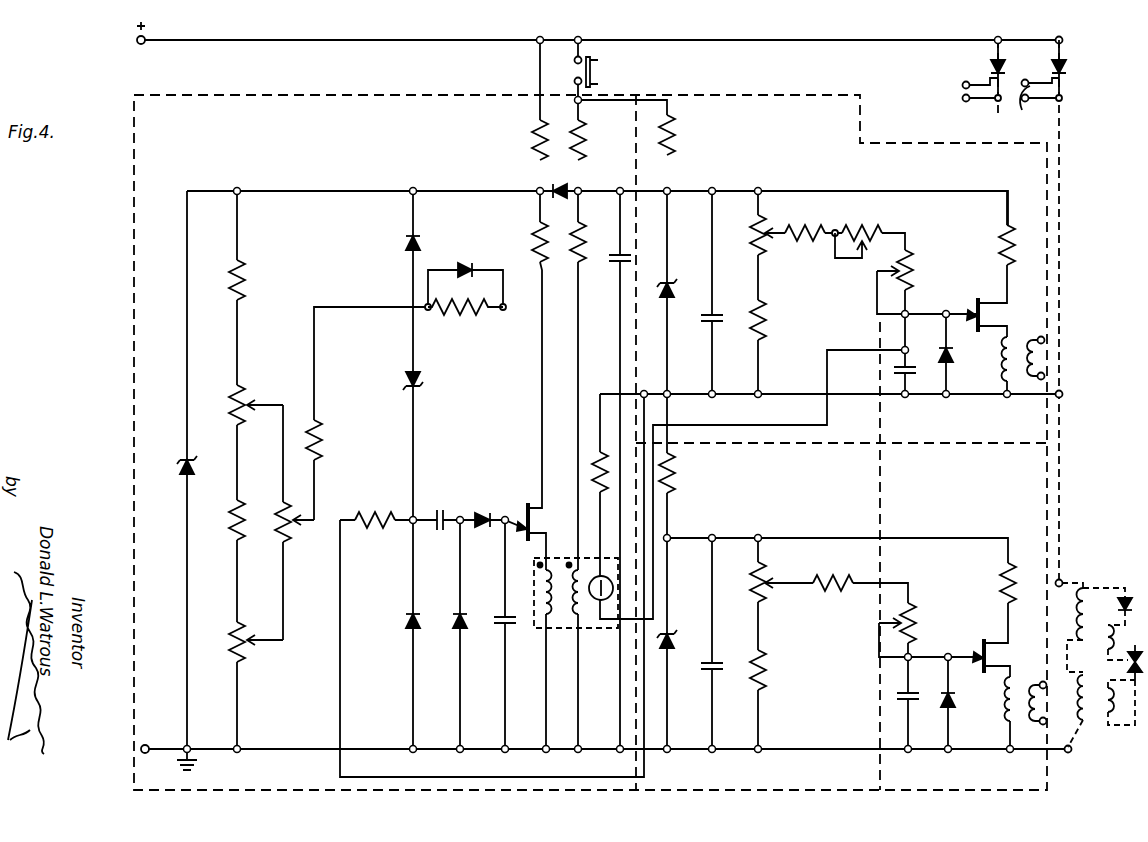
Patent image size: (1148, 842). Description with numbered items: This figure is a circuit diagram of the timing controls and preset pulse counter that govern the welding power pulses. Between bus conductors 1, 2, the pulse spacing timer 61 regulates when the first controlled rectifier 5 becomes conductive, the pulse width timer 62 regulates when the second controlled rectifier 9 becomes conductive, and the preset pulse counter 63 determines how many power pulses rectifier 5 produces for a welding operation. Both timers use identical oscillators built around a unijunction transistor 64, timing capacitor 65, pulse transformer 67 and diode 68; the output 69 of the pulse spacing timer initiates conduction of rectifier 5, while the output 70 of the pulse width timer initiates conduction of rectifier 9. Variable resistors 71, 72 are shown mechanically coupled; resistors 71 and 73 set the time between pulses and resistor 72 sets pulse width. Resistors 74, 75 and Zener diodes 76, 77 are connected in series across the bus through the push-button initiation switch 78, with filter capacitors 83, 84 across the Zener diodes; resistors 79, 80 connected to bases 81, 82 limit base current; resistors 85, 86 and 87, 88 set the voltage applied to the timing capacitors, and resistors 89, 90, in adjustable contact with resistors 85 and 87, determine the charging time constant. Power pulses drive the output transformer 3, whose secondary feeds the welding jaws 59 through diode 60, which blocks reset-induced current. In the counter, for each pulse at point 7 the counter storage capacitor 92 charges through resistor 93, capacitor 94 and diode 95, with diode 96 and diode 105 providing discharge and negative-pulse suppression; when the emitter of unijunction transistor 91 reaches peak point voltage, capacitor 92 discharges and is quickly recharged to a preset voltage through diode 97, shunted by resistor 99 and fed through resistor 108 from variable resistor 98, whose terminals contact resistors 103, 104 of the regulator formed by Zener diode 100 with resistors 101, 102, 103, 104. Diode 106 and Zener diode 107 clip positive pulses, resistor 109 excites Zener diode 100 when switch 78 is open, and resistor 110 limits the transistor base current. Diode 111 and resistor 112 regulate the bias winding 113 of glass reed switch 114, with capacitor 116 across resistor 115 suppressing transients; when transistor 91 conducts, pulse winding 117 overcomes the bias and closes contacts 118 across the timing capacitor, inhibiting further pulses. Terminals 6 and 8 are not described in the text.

The bus conductor 1 is at (136, 43).
The bus conductor 2 is at (151, 744).
The output transformer 3 is at (1090, 578).
The first controlled rectifier 5 is at (1066, 70).
The supply terminal 6 is at (1063, 38).
The point 7 is at (1063, 394).
The output terminal 8 is at (1072, 752).
The second controlled rectifier 9 is at (988, 72).
The welding jaws 59 is at (1126, 662).
The diode 60 is at (1128, 596).
The pulse spacing timer 61 is at (782, 92).
The pulse width timer 62 is at (1050, 790).
The preset pulse counter 63 is at (366, 92).
The unijunction transistor 64 is at (990, 320).
The timing capacitor 65 is at (894, 371).
The pulse transformer 67 is at (1022, 388).
The diode 68 is at (952, 356).
The output of pulse transformer 69 is at (1070, 352).
The output of pulse transformer 70 is at (962, 86).
The variable resistor 71 is at (913, 272).
The variable resistor 72 is at (916, 624).
The resistor 73 is at (860, 224).
The resistor 74 is at (675, 137).
The resistor 75 is at (675, 476).
The Zener diode 76 is at (674, 286).
The Zener diode 77 is at (674, 630).
The initiation switch 78 is at (600, 70).
The resistor 79 is at (998, 240).
The resistor 80 is at (1000, 580).
The base 81 is at (998, 300).
The base 82 is at (1000, 642).
The filter capacitor 83 is at (716, 310).
The filter capacitor 84 is at (716, 658).
The resistor 85 is at (750, 238).
The resistor 86 is at (766, 320).
The resistor 87 is at (750, 586).
The resistor 88 is at (766, 672).
The resistor 89 is at (804, 242).
The resistor 90 is at (832, 592).
The unijunction transistor 91 is at (524, 506).
The counter storage capacitor 92 is at (512, 626).
The resistor 93 is at (376, 530).
The capacitor 94 is at (438, 510).
The diode 95 is at (484, 512).
The diode 96 is at (464, 610).
The diode 97 is at (466, 266).
The variable resistor 98 is at (292, 542).
The resistor 99 is at (466, 316).
The Zener diode 100 is at (182, 472).
The resistor 101 is at (245, 284).
The resistor 102 is at (230, 522).
The resistor 103 is at (258, 396).
The resistor 104 is at (245, 652).
The diode 105 is at (406, 616).
The diode 106 is at (406, 240).
The Zener diode 107 is at (406, 382).
The resistor 108 is at (322, 442).
The resistor 109 is at (532, 142).
The resistor 110 is at (532, 246).
The diode 111 is at (568, 186).
The resistor 112 is at (586, 142).
The bias winding 113 is at (570, 630).
The glass reed switch 114 is at (558, 560).
The resistor 115 is at (586, 242).
The capacitor 116 is at (612, 266).
The pulse winding 117 is at (536, 580).
The contacts 118 is at (600, 602).